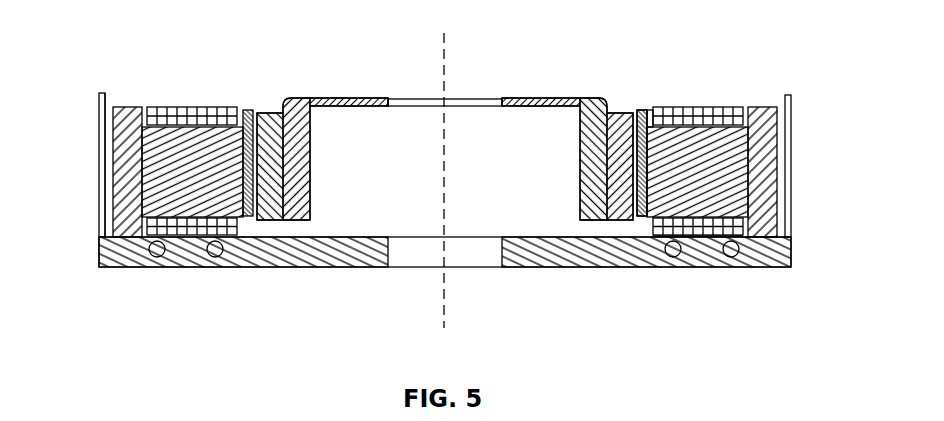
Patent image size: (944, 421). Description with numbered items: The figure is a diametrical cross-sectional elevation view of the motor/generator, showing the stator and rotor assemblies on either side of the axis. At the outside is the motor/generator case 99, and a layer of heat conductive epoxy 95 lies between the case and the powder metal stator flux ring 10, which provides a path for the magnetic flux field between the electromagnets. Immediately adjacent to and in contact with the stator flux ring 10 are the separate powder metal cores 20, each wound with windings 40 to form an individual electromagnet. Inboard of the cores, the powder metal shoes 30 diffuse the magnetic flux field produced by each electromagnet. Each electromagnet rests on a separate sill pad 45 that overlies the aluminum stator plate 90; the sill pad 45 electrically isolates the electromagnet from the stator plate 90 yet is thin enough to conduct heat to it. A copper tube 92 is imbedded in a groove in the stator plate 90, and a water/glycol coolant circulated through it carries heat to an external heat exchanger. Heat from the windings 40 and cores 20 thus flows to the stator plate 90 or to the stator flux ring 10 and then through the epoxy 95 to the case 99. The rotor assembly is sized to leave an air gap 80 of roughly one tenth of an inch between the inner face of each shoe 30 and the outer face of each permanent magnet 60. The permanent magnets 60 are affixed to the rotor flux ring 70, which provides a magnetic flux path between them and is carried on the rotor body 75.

The stator flux ring 10 is at (118, 135).
The powder metal cores 20 is at (152, 202).
The shoes 30 is at (648, 116).
The windings 40 is at (167, 110).
The sill pad 45 is at (703, 236).
The permanent magnets 60 is at (636, 112).
The rotor flux ring 70 is at (297, 100).
The rotor body 75 is at (367, 100).
The air gap 80 is at (248, 113).
The stator plate 90 is at (325, 262).
The copper tube 92 is at (215, 257).
The heat conductive epoxy 95 is at (108, 183).
The motor/generator case 99 is at (104, 215).